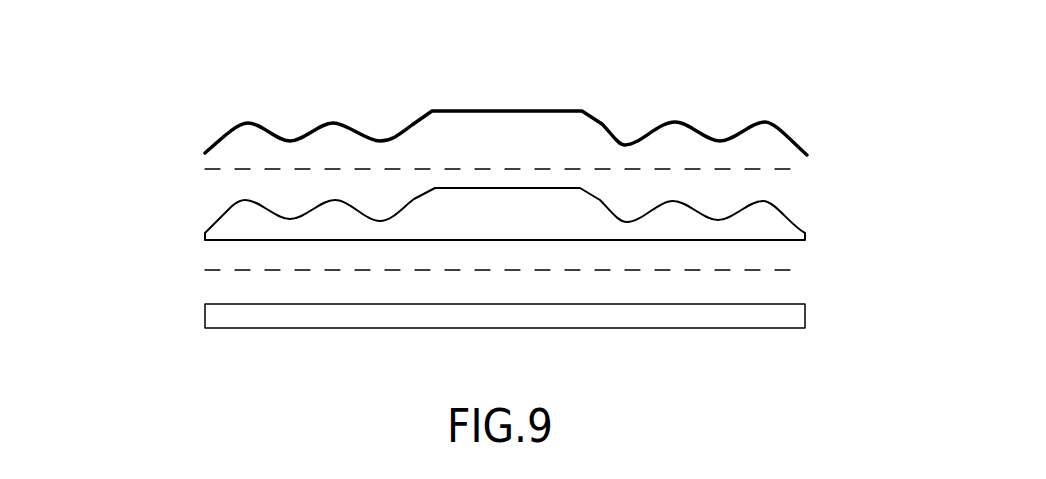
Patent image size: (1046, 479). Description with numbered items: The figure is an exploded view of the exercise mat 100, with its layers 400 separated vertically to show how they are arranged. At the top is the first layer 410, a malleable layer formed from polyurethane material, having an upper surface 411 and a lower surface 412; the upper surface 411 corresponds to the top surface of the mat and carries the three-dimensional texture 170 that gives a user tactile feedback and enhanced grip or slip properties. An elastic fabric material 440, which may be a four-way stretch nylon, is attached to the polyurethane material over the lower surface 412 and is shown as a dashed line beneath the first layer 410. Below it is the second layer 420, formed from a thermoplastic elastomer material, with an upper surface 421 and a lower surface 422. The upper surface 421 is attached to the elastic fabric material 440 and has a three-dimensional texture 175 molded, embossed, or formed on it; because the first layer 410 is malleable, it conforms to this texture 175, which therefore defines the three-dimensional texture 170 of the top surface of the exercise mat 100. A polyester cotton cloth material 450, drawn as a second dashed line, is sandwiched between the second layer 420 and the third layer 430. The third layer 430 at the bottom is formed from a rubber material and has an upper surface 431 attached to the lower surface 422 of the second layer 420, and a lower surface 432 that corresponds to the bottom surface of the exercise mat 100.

The layers 400 is at (102, 120).
The first layer 410 is at (797, 145).
The upper surface of first layer 411 is at (218, 130).
The lower surface of first layer 412 is at (243, 133).
The three-dimensional texture 170 is at (623, 128).
The three-dimensional texture of second layer 175 is at (717, 202).
The exercise mat 100 is at (812, 105).
The elastic fabric material 440 is at (792, 170).
The second layer 420 is at (792, 228).
The upper surface of second layer 421 is at (210, 220).
The lower surface of second layer 422 is at (233, 242).
The polyester cotton cloth material 450 is at (805, 270).
The third layer 430 is at (797, 315).
The upper surface of third layer 431 is at (233, 297).
The lower surface of third layer 432 is at (237, 332).